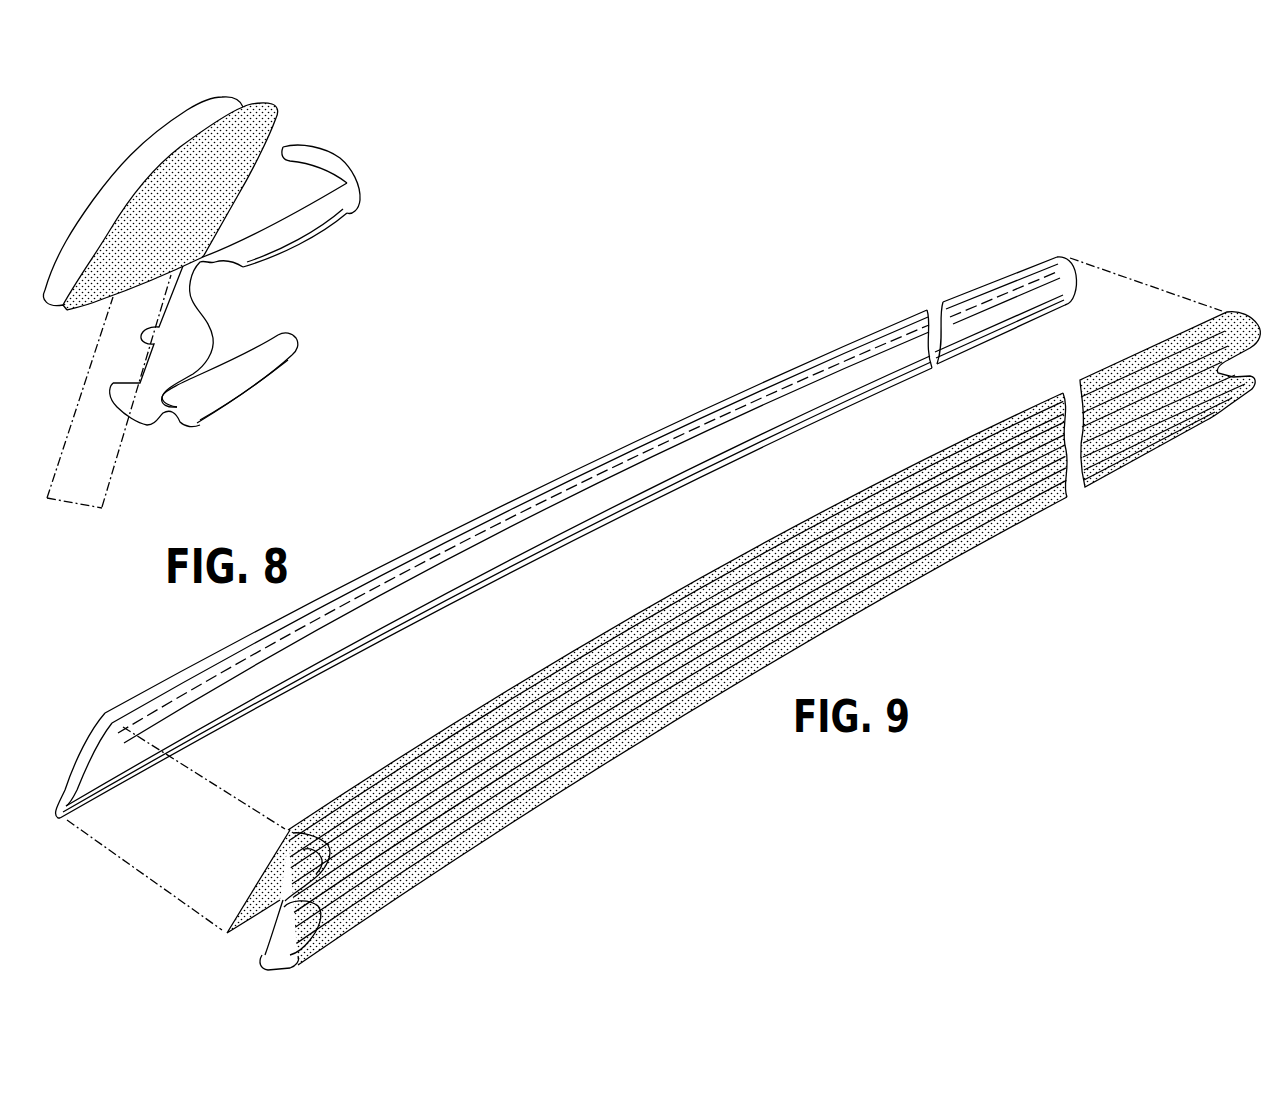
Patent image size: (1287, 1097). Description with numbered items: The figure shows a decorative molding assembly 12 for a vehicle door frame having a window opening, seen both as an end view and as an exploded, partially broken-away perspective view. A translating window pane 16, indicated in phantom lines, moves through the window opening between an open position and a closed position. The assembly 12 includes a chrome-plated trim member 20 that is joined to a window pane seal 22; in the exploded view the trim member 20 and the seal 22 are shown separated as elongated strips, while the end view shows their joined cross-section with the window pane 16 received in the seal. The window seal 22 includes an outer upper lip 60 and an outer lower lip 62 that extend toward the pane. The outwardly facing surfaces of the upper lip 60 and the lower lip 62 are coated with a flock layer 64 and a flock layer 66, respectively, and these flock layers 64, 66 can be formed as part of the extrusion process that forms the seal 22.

In FIG. 8, the decorative molding assembly 12 is at (255, 256).
In FIG. 9, the decorative molding assembly 12 is at (658, 613).
In FIG. 8, the window pane 16 is at (117, 465).
In FIG. 8, the chrome-plated trim member 20 is at (188, 105).
In FIG. 9, the chrome-plated trim member 20 is at (538, 480).
In FIG. 8, the window pane seal 22 is at (275, 287).
In FIG. 9, the window pane seal 22 is at (420, 897).
In FIG. 8, the outer upper lip 60 is at (360, 165).
In FIG. 8, the outer lower lip 62 is at (300, 337).
In FIG. 8, the flock layer 64 is at (323, 230).
In FIG. 8, the flock layer 66 is at (255, 397).